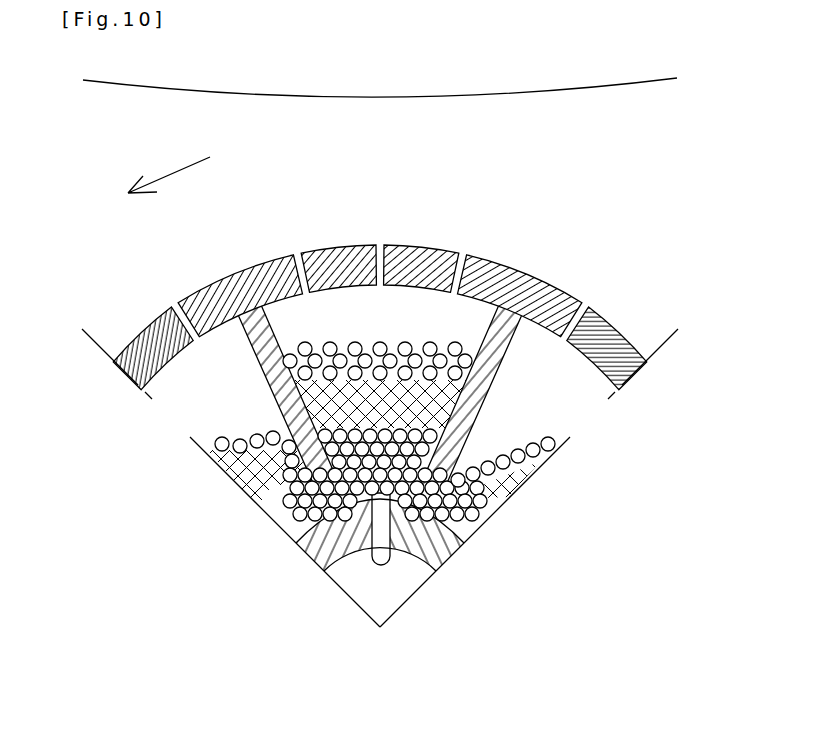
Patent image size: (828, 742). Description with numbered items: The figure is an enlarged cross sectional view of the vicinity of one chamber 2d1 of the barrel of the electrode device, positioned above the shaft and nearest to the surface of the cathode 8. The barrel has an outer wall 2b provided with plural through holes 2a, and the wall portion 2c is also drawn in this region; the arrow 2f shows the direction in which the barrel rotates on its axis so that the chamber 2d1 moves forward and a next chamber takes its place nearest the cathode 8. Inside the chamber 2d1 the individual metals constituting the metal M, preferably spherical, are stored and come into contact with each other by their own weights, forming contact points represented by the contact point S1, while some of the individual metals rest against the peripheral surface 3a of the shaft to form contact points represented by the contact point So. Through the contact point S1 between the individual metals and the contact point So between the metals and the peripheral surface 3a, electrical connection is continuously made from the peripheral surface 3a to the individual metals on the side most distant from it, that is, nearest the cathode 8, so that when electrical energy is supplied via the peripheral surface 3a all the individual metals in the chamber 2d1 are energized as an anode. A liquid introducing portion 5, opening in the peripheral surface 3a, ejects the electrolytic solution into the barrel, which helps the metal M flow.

The cathode 8 is at (598, 86).
The arrow 2f is at (170, 167).
The through holes 2a is at (300, 264).
The outer wall 2b is at (247, 272).
The drum wall plate 2c is at (240, 315).
The chamber 2d1 is at (352, 302).
The metal M is at (387, 344).
The contact point S1 is at (418, 357).
The contact point So is at (388, 548).
The peripheral surface 3a is at (492, 503).
The liquid introducing portion 5 is at (400, 549).